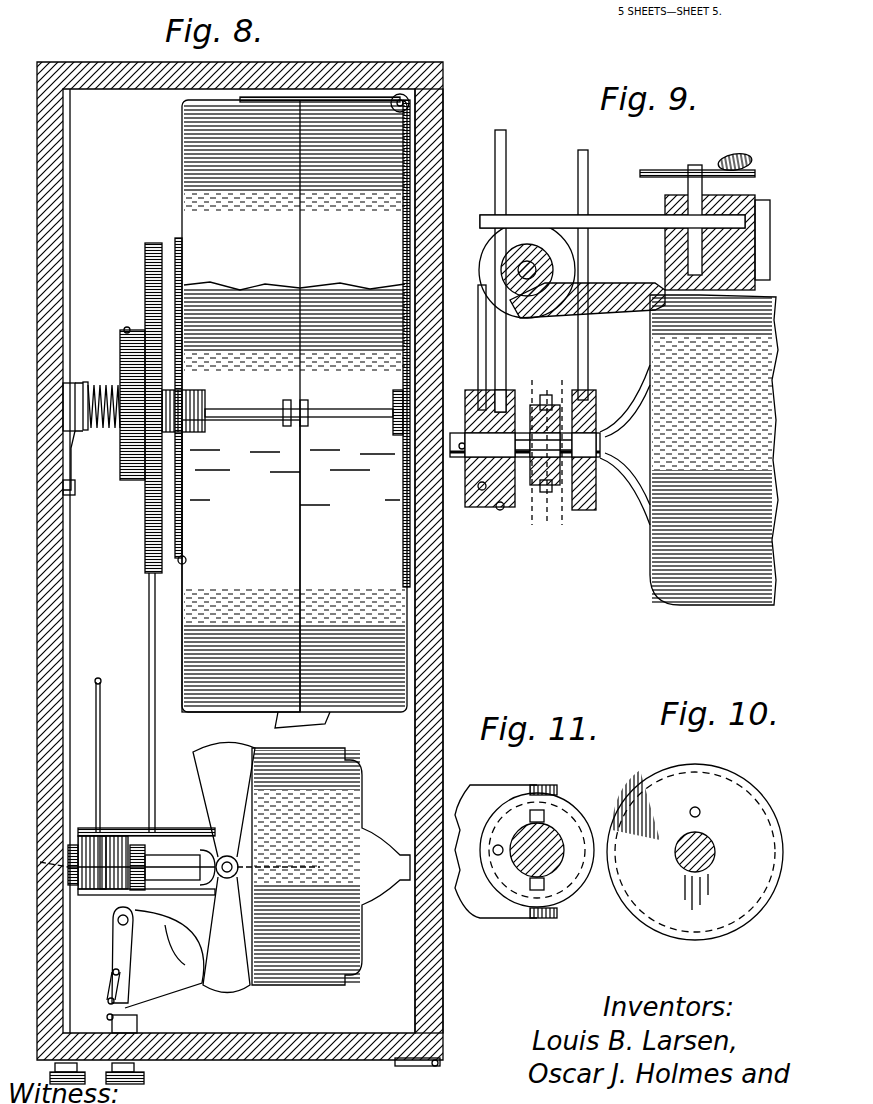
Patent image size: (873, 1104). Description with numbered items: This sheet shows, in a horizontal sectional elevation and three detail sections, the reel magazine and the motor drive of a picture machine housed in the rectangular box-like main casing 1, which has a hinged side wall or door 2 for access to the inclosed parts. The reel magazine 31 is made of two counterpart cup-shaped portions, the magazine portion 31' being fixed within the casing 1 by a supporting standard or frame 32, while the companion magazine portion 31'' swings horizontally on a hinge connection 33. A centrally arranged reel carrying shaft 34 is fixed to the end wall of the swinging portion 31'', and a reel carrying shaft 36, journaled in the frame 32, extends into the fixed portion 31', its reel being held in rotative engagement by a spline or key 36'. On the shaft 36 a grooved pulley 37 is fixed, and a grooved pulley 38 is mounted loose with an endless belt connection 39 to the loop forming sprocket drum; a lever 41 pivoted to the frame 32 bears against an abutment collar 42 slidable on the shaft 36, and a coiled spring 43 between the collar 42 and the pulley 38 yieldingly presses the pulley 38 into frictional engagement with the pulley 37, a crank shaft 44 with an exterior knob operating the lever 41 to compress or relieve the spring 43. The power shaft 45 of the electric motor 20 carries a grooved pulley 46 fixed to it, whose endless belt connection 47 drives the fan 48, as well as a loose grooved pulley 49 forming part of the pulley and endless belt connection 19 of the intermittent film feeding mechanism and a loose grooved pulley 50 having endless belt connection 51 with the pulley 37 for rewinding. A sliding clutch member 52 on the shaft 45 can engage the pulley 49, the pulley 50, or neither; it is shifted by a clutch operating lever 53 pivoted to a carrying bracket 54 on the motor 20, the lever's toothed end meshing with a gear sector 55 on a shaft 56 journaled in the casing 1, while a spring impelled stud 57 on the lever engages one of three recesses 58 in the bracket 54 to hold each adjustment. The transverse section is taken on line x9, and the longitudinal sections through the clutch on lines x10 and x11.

In FIG. 8, the main casing 1 is at (126, 72).
In FIG. 8, the hinged side wall or door 2 is at (437, 600).
In FIG. 8, the pulley and endless belt connection 19 is at (102, 762).
In FIG. 9, the pulley and endless belt connection 19 is at (506, 185).
In FIG. 8, the electric motor 20 is at (331, 866).
In FIG. 9, the electric motor 20 is at (689, 450).
In FIG. 8, the reel magazine 31 is at (294, 406).
In FIG. 8, the fixed magazine portion 31' is at (241, 566).
In FIG. 8, the swinging magazine portion 31'' is at (381, 343).
In FIG. 8, the supporting standard or frame 32 is at (103, 432).
In FIG. 8, the hinge connection 33 is at (412, 103).
In FIG. 8, the reel carrying shaft 34 is at (355, 420).
In FIG. 8, the reel carrying shaft 36 is at (280, 427).
In FIG. 8, the spline or key 36' is at (250, 427).
In FIG. 8, the grooved pulley 37 is at (145, 252).
In FIG. 8, the grooved pulley 38 is at (120, 340).
In FIG. 8, the endless belt connection 39 is at (127, 327).
In FIG. 8, the lever 41 is at (63, 405).
In FIG. 8, the abutment collar 42 is at (85, 382).
In FIG. 8, the coiled spring 43 is at (103, 385).
In FIG. 8, the crank shaft 44 is at (75, 485).
In FIG. 8, the power shaft 45 is at (68, 876).
In FIG. 9, the power shaft 45 is at (455, 465).
In FIG. 10, the power shaft 45 is at (716, 852).
In FIG. 11, the power shaft 45 is at (508, 872).
In FIG. 8, the grooved pulley 46 is at (78, 848).
In FIG. 9, the grooved pulley 46 is at (480, 405).
In FIG. 8, the endless belt connection 47 is at (176, 838).
In FIG. 9, the endless belt connection 47 is at (626, 215).
In FIG. 8, the fan 48 is at (224, 867).
In FIG. 9, the fan 48 is at (733, 155).
In FIG. 8, the grooved pulley 49 is at (105, 828).
In FIG. 9, the grooved pulley 49 is at (490, 500).
In FIG. 8, the grooved pulley 50 is at (145, 830).
In FIG. 9, the grooved pulley 50 is at (597, 405).
In FIG. 10, the grooved pulley 50 is at (695, 852).
In FIG. 8, the endless belt connection 51 is at (149, 645).
In FIG. 9, the endless belt connection 51 is at (588, 267).
In FIG. 9, the sliding clutch member 52 is at (528, 490).
In FIG. 11, the sliding clutch member 52 is at (575, 812).
In FIG. 8, the clutch operating lever 53 is at (123, 938).
In FIG. 9, the clutch operating lever 53 is at (565, 382).
In FIG. 11, the clutch operating lever 53 is at (482, 805).
In FIG. 8, the carrying bracket 54 is at (165, 992).
In FIG. 8, the gear sector 55 is at (107, 1018).
In FIG. 8, the shaft 56 is at (150, 1080).
In FIG. 8, the spring impelled stud 57 is at (108, 995).
In FIG. 8, the recesses 58 is at (145, 1010).
In FIG. 8, the section line x9 is at (165, 862).
In FIG. 9, the section line x10 is at (554, 450).
In FIG. 9, the section line x11 is at (534, 451).